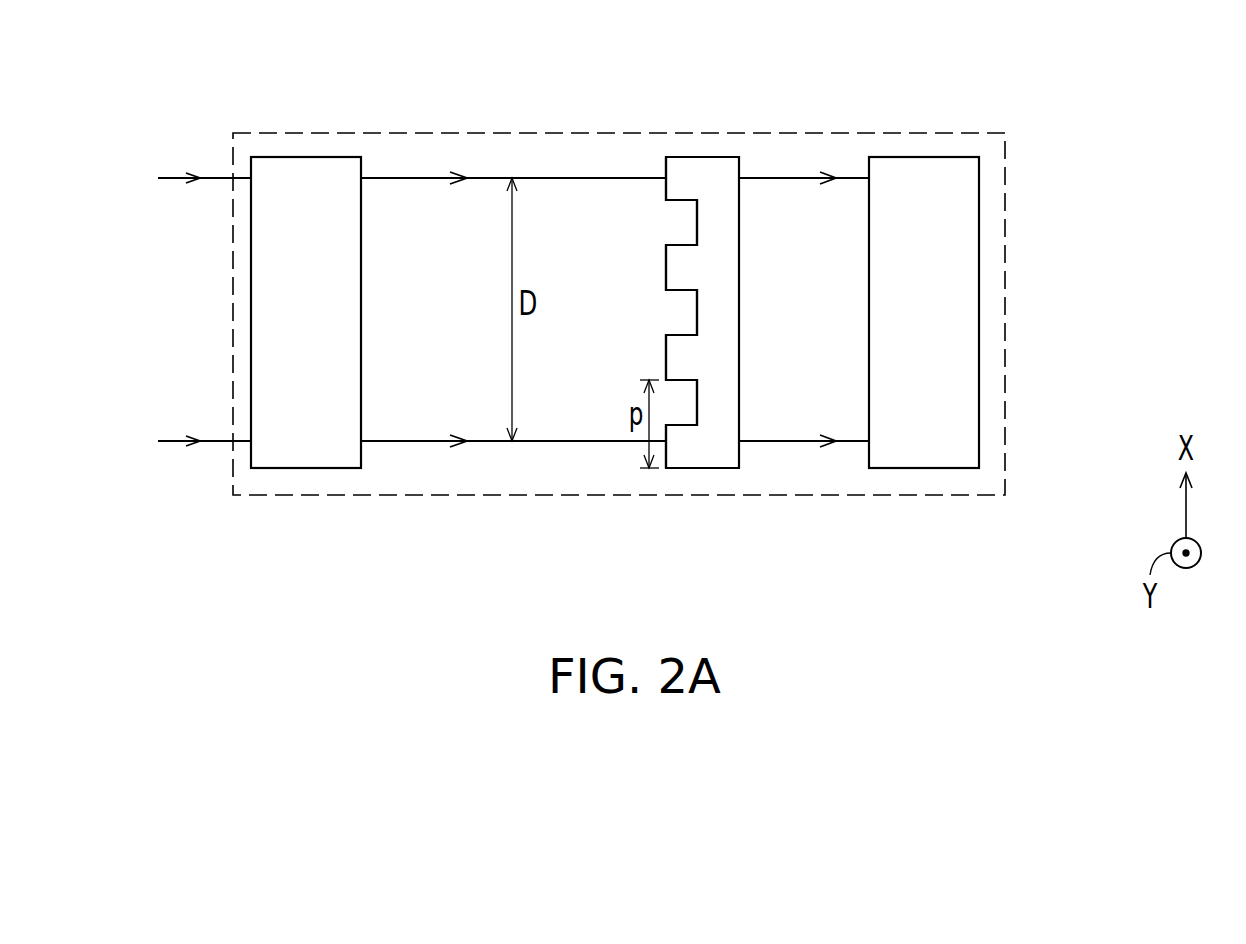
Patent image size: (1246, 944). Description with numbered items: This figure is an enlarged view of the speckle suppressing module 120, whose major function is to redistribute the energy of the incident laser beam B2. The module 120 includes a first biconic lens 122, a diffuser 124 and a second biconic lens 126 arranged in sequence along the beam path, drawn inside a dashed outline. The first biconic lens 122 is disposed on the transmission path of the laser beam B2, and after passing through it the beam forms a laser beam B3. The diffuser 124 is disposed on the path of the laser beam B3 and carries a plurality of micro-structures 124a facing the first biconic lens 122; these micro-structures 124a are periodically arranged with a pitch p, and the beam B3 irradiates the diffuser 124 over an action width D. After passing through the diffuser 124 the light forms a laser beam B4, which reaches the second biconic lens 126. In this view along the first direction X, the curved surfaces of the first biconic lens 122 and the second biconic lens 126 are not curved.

The speckle suppressing module 120 is at (1005, 295).
The first biconic lens 122 is at (296, 192).
The diffuser 124 is at (720, 180).
The micro-structures 124a is at (664, 168).
The second biconic lens 126 is at (946, 195).
The laser beam B2 is at (204, 290).
The laser beam B3 is at (397, 177).
The laser beam B4 is at (768, 178).